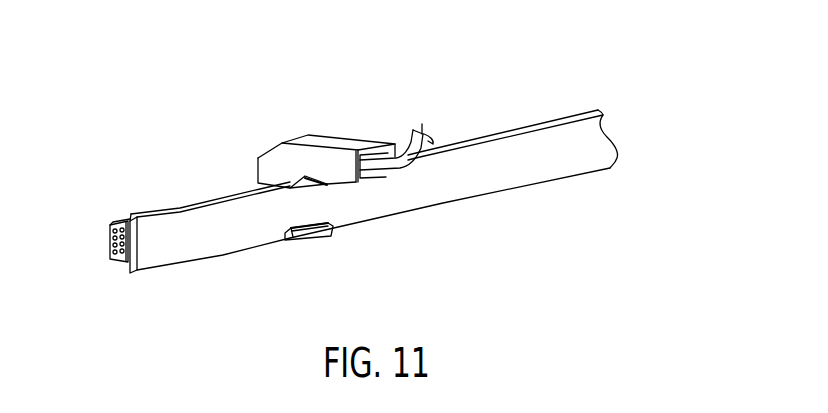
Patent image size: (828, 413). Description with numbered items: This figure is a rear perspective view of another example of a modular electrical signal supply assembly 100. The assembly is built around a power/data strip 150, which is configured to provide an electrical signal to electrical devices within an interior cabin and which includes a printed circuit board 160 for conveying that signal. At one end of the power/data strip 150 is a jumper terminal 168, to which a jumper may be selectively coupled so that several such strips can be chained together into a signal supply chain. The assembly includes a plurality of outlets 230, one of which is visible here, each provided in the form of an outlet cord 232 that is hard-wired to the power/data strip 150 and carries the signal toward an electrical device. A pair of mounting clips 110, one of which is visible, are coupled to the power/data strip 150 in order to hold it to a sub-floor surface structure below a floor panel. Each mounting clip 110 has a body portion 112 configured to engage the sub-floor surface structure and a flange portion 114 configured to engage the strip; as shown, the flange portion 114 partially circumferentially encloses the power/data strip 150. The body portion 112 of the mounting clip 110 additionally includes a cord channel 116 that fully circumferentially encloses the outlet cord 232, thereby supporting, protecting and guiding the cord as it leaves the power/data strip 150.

The modular electrical signal supply assembly 100 is at (253, 114).
The mounting clip 110 is at (302, 244).
The body portion 112 is at (352, 142).
The flange portion 114 is at (321, 240).
The cord channel 116 is at (361, 183).
The power/data strip 150 is at (185, 264).
The printed circuit board 160 is at (223, 254).
The jumper terminal 168 is at (119, 262).
The outlet 230 is at (400, 170).
The outlet cord 232 is at (406, 168).